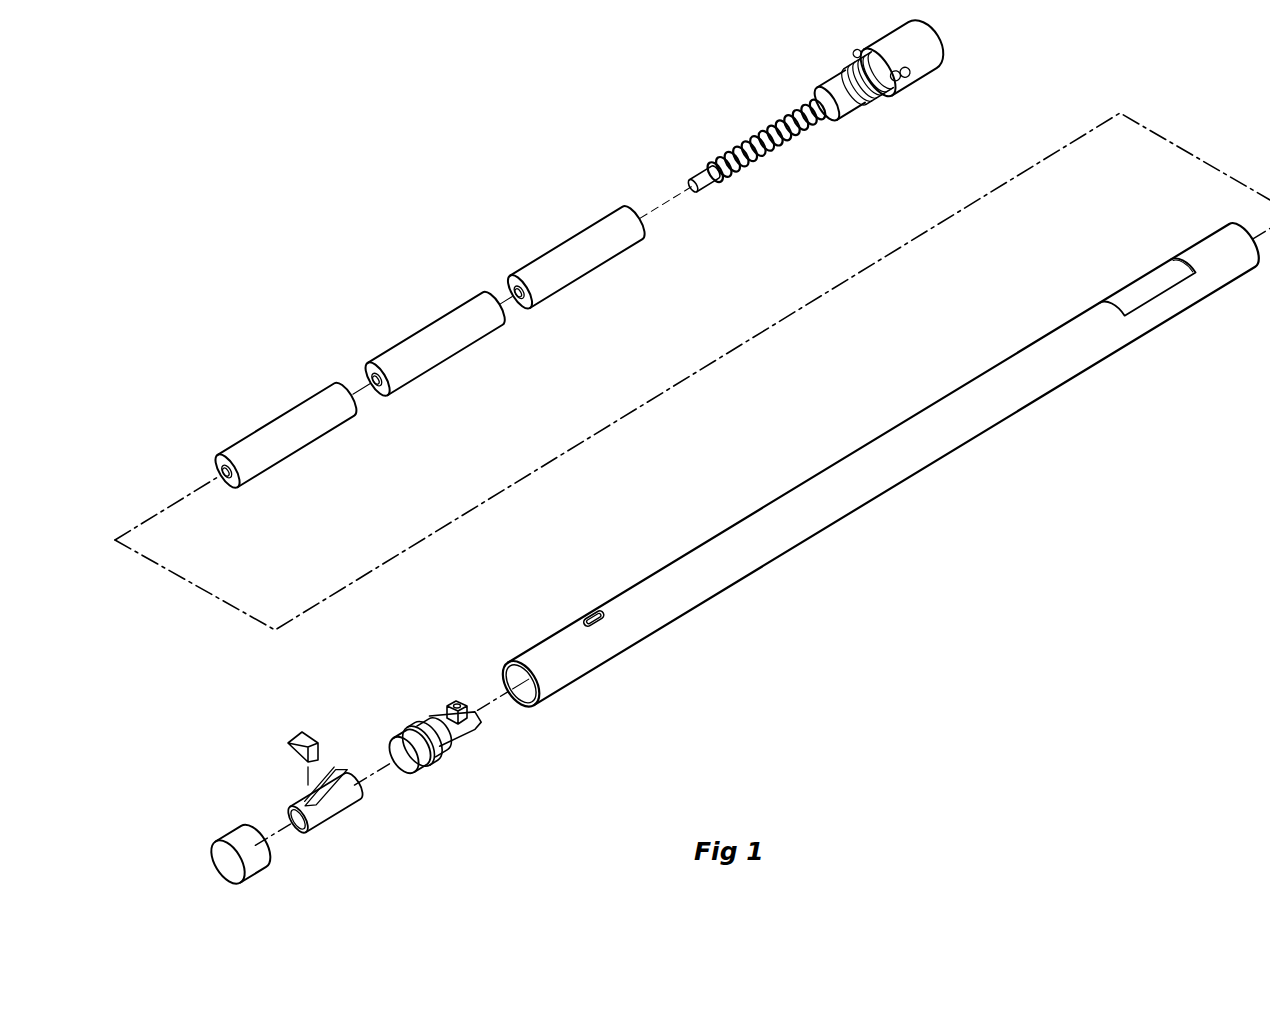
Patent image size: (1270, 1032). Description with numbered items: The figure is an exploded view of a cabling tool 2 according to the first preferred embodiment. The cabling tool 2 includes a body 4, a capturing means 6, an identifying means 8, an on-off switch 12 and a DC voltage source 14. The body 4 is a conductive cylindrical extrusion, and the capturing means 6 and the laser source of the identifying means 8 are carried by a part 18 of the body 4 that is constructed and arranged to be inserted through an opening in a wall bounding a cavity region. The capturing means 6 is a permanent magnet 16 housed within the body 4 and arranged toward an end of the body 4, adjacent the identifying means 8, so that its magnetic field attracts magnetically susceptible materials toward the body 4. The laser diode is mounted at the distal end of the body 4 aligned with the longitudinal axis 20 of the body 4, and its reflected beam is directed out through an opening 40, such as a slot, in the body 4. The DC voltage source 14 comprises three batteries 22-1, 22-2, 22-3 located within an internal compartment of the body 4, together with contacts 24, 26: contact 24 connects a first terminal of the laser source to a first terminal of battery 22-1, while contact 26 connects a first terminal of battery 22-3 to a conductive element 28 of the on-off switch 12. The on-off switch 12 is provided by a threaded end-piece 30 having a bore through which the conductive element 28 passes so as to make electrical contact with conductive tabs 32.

The cabling tool 2 is at (856, 511).
The body 4 is at (856, 478).
The capturing means 6 is at (262, 874).
The identifying means 8 is at (457, 740).
The on-off switch 12 is at (836, 150).
The DC voltage source 14 is at (410, 305).
The permanent magnet 16 is at (215, 849).
The part of the body 18 is at (672, 668).
The longitudinal axis 20 is at (430, 750).
The battery 22-1 is at (312, 432).
The battery 22-2 is at (449, 349).
The battery 22-3 is at (588, 259).
The contact 24 is at (447, 704).
The contact 26 is at (720, 188).
The conductive element 28 is at (777, 150).
The threaded end-piece 30 is at (844, 84).
The conductive tabs 32 is at (913, 70).
The opening 40 is at (590, 612).